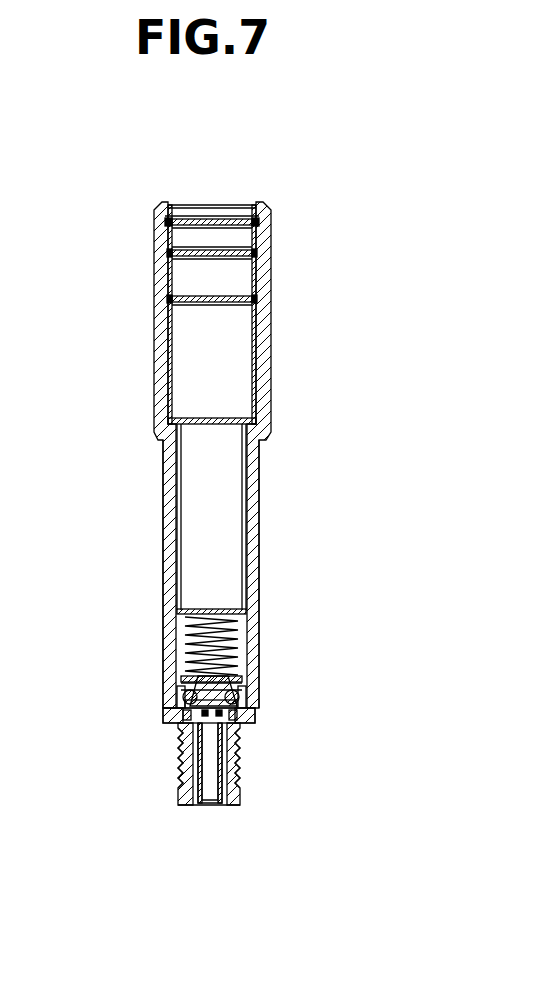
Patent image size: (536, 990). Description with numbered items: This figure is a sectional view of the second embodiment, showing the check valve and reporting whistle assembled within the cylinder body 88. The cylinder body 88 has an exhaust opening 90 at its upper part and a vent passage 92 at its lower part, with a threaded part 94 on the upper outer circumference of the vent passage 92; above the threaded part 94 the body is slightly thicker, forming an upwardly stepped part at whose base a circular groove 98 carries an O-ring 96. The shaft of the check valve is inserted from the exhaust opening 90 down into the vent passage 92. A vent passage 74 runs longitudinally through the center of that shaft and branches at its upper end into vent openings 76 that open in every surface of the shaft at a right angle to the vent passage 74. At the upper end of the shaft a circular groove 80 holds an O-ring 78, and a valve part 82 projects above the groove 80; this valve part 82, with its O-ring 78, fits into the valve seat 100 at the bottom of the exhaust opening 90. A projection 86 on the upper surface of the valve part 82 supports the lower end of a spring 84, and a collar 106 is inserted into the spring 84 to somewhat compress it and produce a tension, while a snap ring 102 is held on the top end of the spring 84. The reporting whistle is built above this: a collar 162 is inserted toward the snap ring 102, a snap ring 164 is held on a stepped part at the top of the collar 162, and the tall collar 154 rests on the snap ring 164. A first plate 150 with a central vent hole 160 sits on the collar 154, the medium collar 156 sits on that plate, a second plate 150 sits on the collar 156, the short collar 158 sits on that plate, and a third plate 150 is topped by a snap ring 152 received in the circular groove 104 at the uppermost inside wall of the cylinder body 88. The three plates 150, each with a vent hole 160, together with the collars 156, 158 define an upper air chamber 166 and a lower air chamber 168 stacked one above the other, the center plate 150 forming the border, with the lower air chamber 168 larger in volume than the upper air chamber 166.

The vent passage 74 is at (240, 802).
The vent openings 76 is at (173, 715).
The O-ring 78 is at (241, 701).
The circular groove 80 is at (246, 688).
The valve part 82 is at (177, 697).
The spring 84 is at (244, 678).
The projection 86 is at (178, 640).
The cylinder body 88 is at (258, 488).
The exhaust opening 90 is at (216, 470).
The vent passage 92 is at (242, 778).
The threaded part 94 is at (244, 748).
The O-ring 96 is at (178, 738).
The circular groove 98 is at (163, 715).
The valve seat 100 is at (178, 707).
The snap ring 102 is at (248, 612).
The circular groove 104 is at (256, 218).
The collar 106 is at (240, 645).
The circular plates 150 is at (166, 222).
The snap ring 152 is at (232, 207).
The tall collar 154 is at (262, 352).
The medium collar 156 is at (232, 285).
The short collar 158 is at (240, 243).
The vent holes 160 is at (205, 222).
The collar 162 is at (178, 493).
The snap ring 164 is at (218, 421).
The upper air chamber 166 is at (253, 236).
The lower air chamber 168 is at (248, 298).